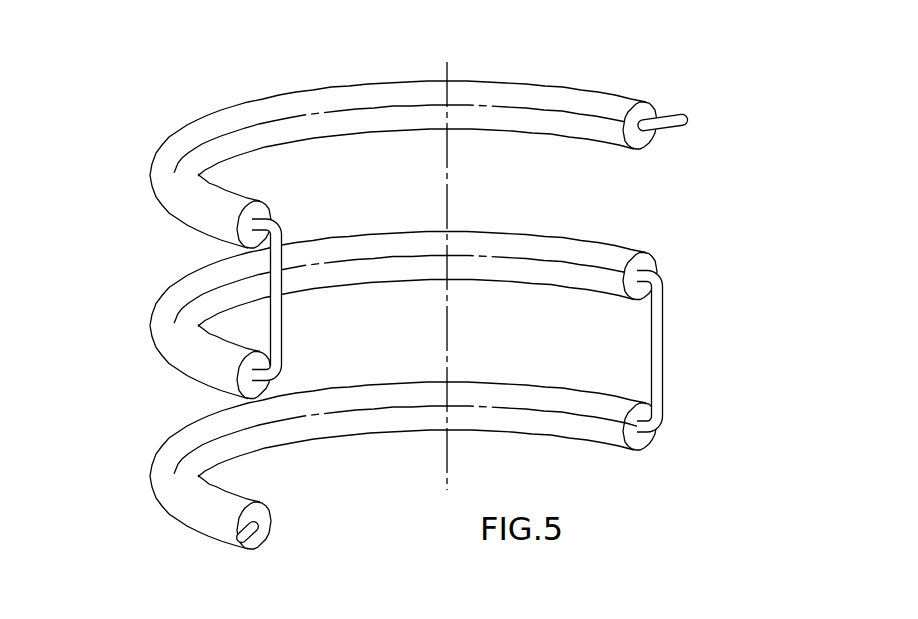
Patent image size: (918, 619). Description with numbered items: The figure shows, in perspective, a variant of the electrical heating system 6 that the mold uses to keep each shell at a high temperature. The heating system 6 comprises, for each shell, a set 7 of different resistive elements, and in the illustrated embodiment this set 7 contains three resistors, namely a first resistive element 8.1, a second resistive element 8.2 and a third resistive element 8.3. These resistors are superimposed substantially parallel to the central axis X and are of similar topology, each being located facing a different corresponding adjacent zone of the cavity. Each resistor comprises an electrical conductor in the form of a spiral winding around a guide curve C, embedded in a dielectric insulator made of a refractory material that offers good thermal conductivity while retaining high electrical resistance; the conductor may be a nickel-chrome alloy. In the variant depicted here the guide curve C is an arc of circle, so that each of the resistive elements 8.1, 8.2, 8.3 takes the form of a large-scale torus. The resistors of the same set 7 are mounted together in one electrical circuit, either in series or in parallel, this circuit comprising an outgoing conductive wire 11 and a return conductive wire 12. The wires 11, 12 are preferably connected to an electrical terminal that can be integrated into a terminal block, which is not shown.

The electrical heating system 6 is at (630, 70).
The set of resistive elements 7 is at (56, 190).
The first resistive element 8.1 is at (167, 183).
The second resistive element 8.2 is at (165, 336).
The third resistive element 8.3 is at (165, 483).
The outgoing conductive wire 11 is at (264, 530).
The return conductive wire 12 is at (664, 131).
The central axis X is at (447, 338).
The guide curve C is at (500, 408).